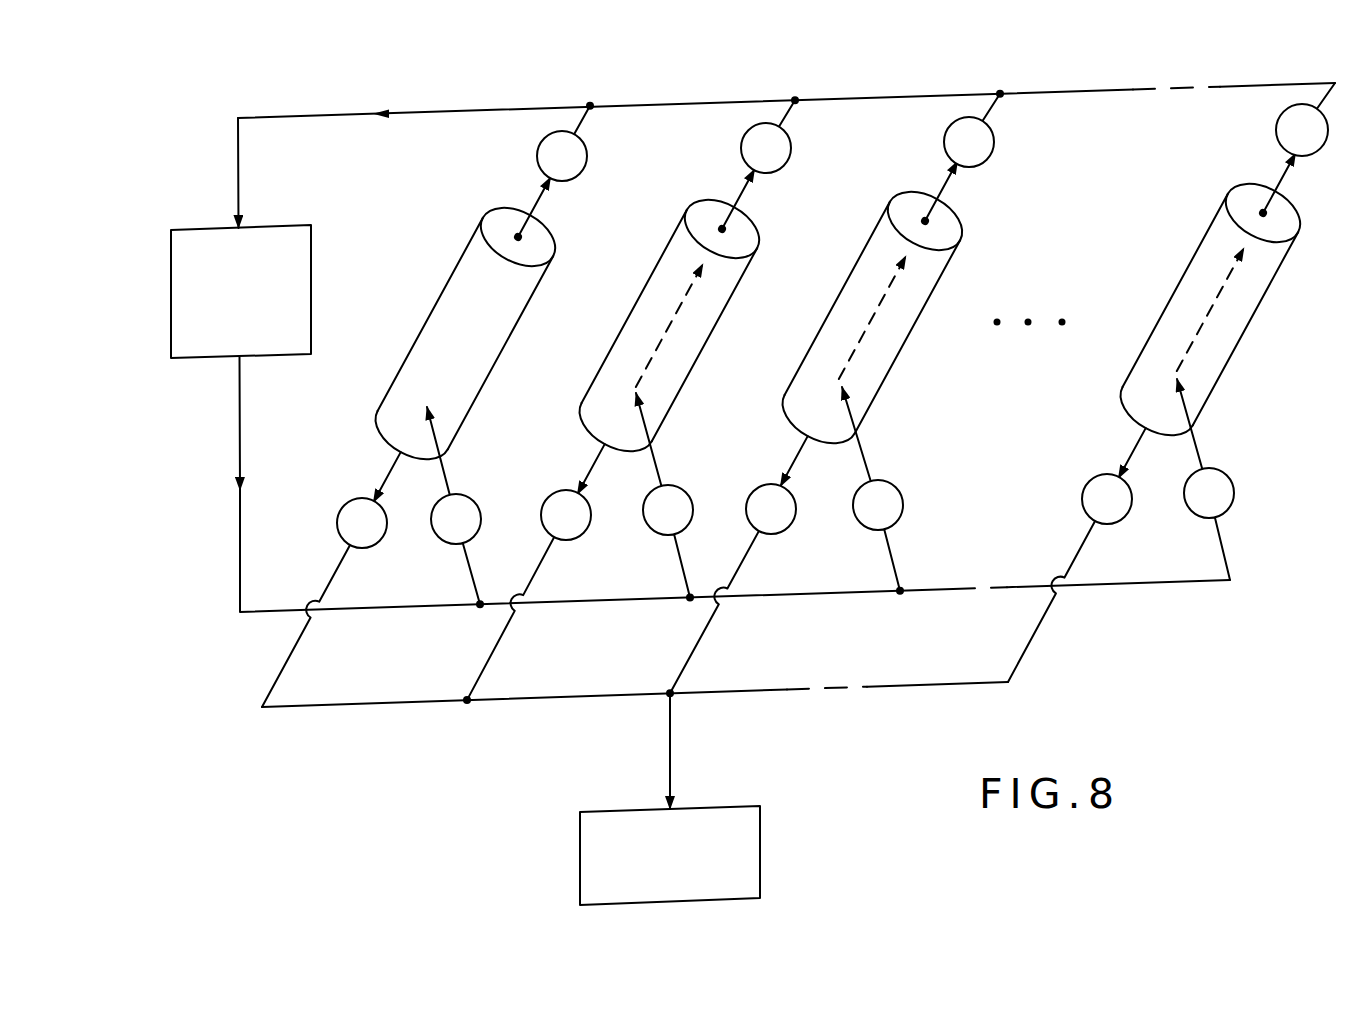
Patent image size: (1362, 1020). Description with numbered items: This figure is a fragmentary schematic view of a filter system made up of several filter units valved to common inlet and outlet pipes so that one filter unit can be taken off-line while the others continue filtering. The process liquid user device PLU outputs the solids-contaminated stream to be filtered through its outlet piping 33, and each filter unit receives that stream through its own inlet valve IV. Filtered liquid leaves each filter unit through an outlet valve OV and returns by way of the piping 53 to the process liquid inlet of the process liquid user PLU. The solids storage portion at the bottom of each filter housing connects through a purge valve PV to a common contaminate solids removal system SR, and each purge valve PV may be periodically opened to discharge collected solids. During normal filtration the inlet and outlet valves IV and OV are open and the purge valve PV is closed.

The piping 53 is at (438, 108).
The outlet piping 33 is at (240, 556).
The process liquid user device PLU is at (311, 240).
The contaminate solids removal system SR is at (580, 848).
The outlet valve OV is at (932, 142).
The purge valve PV is at (734, 511).
The inlet valve IV is at (832, 506).